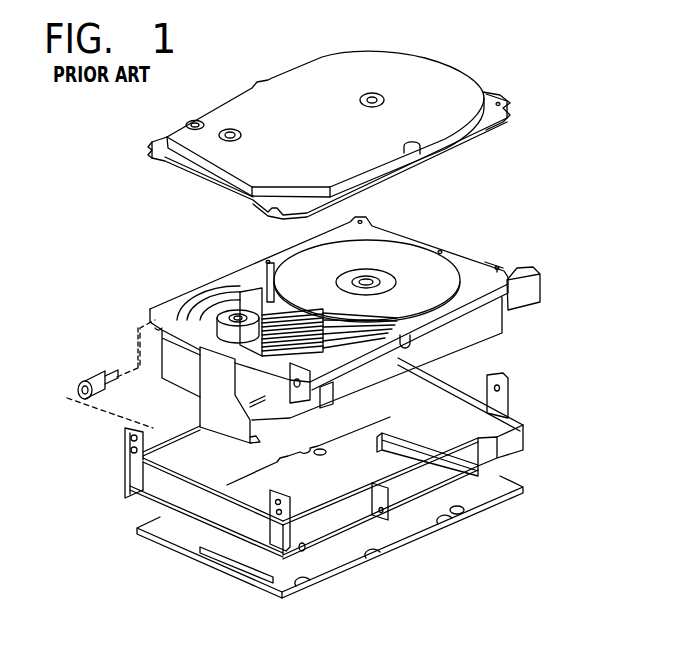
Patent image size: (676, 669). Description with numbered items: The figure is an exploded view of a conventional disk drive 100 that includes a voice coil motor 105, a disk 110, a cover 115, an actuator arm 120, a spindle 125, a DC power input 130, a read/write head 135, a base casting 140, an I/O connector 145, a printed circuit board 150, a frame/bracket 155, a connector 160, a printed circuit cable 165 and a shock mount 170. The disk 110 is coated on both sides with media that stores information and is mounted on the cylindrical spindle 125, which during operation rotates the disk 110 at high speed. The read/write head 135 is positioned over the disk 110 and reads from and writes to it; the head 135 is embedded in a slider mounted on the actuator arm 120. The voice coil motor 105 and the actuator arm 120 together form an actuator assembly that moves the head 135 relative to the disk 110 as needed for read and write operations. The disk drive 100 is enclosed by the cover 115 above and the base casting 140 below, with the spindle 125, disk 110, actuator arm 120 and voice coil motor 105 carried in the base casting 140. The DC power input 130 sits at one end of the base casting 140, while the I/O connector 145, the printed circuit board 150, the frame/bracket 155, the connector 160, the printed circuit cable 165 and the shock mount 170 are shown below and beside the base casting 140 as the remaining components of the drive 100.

The disk drive 100 is at (519, 72).
The voice coil motor 105 is at (236, 316).
The disk 110 is at (432, 266).
The cover 115 is at (392, 62).
The actuator arm 120 is at (273, 313).
The spindle 125 is at (371, 279).
The DC power input 130 is at (531, 282).
The read/write head 135 is at (485, 263).
The base casting 140 is at (467, 336).
The I/O connector 145 is at (424, 452).
The printed circuit board 150 is at (477, 502).
The frame/bracket 155 is at (313, 528).
The connector 160 is at (238, 565).
The printed circuit cable 165 is at (208, 413).
The shock mount 170 is at (88, 372).